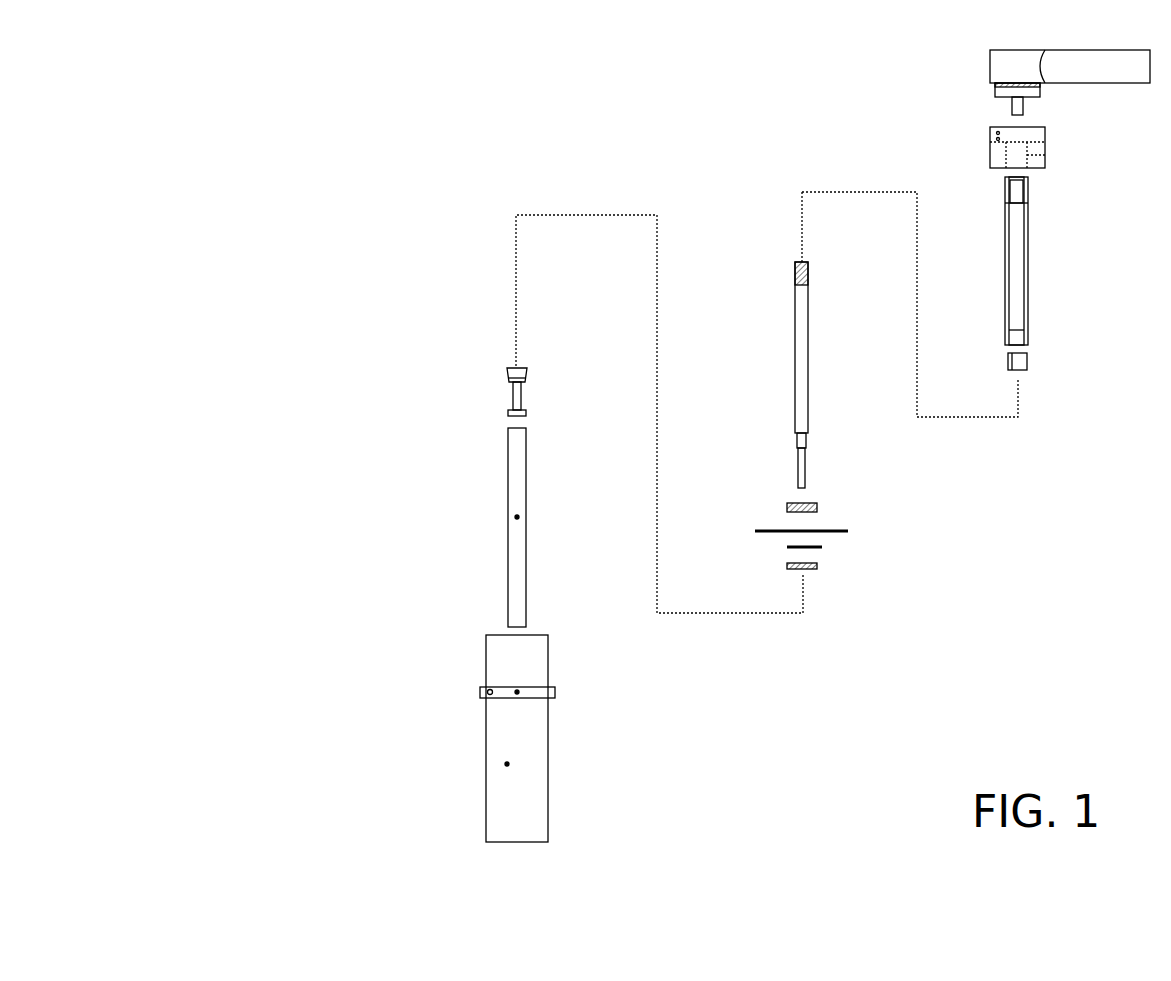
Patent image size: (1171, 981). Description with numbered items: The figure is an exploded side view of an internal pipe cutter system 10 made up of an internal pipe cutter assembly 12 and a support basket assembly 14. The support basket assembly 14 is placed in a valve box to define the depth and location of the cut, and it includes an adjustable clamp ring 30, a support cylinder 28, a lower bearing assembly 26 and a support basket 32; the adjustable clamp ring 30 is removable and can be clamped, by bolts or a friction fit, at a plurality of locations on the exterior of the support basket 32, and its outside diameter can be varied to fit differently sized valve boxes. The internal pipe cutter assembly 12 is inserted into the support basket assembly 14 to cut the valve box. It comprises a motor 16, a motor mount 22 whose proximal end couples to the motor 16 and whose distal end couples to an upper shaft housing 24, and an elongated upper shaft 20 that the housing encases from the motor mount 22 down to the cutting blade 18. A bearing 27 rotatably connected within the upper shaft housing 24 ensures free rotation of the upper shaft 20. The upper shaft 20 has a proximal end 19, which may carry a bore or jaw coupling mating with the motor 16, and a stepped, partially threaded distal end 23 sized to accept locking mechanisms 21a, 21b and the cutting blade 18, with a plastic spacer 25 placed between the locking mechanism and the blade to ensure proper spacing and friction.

The internal pipe cutter system 10 is at (410, 92).
The internal pipe cutter assembly 12 is at (880, 112).
The support basket assembly 14 is at (345, 622).
The motor 16 is at (997, 65).
The cutting blade 18 is at (752, 528).
The proximal end 19 is at (812, 281).
The upper shaft 20 is at (808, 348).
The locking mechanism 21a is at (817, 507).
The locking mechanism 21b is at (817, 565).
The motor mount 22 is at (1045, 146).
The distal end 23 is at (810, 464).
The upper shaft housing 24 is at (1030, 253).
The plastic spacer 25 is at (822, 546).
The lower bearing assembly 26 is at (513, 405).
The bearing 27 is at (1027, 358).
The support cylinder 28 is at (514, 517).
The adjustable clamp ring 30 is at (515, 691).
The support basket 32 is at (504, 764).